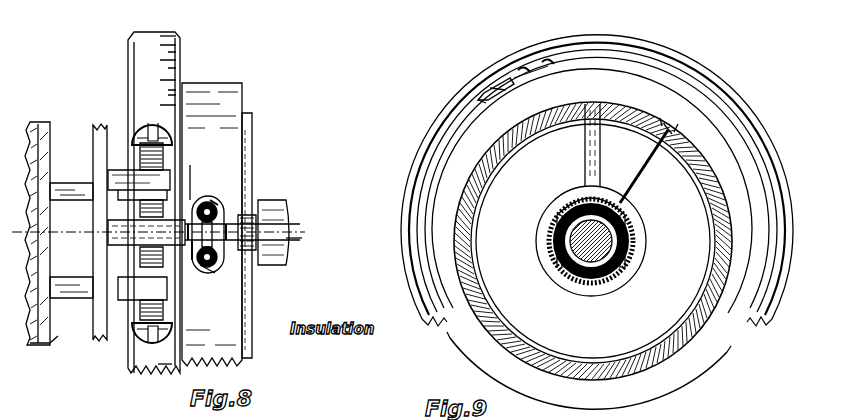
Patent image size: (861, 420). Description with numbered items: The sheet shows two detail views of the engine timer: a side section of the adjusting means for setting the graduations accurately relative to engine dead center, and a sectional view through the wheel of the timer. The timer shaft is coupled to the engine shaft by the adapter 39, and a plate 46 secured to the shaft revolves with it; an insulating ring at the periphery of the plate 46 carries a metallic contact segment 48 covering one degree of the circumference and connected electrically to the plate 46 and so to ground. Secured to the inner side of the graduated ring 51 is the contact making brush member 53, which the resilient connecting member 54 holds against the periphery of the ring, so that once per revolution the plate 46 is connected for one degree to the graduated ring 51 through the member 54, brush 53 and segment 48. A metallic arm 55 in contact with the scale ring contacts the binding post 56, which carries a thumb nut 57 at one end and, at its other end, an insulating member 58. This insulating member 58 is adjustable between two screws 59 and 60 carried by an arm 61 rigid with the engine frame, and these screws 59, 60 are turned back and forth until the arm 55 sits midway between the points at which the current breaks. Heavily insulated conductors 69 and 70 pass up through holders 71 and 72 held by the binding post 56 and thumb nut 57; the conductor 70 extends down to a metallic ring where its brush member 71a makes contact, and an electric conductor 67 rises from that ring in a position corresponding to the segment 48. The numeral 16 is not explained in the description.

In FIG. 8, the adapter 39 is at (72, 183).
In FIG. 8, the graduated ring 51 is at (146, 66).
In FIG. 9, the graduated ring 51 is at (618, 46).
In FIG. 8, the screw 59 is at (138, 133).
In FIG. 8, the screw 60 is at (130, 333).
In FIG. 8, the arm 61 is at (130, 289).
In FIG. 8, the metallic arm 55 is at (190, 165).
In FIG. 8, the holder 72 is at (207, 196).
In FIG. 8, the conductor 69 is at (225, 203).
In FIG. 8, the holder 71 is at (232, 220).
In FIG. 8, the binding post 56 is at (255, 207).
In FIG. 8, the thumb nut 57 is at (255, 267).
In FIG. 8, the conductor 70 is at (220, 270).
In FIG. 9, the conductor 70 is at (585, 148).
In FIG. 8, the insulating member 58 is at (190, 253).
In FIG. 8, the shaft 16 is at (306, 241).
In FIG. 9, the plate 46 is at (670, 380).
In FIG. 9, the brush member 71a is at (636, 224).
In FIG. 9, the electric conductor 67 is at (664, 148).
In FIG. 9, the contact making brush member 53 is at (480, 95).
In FIG. 9, the resilient connecting member 54 is at (505, 90).
In FIG. 9, the metallic contact segment 48 is at (505, 58).